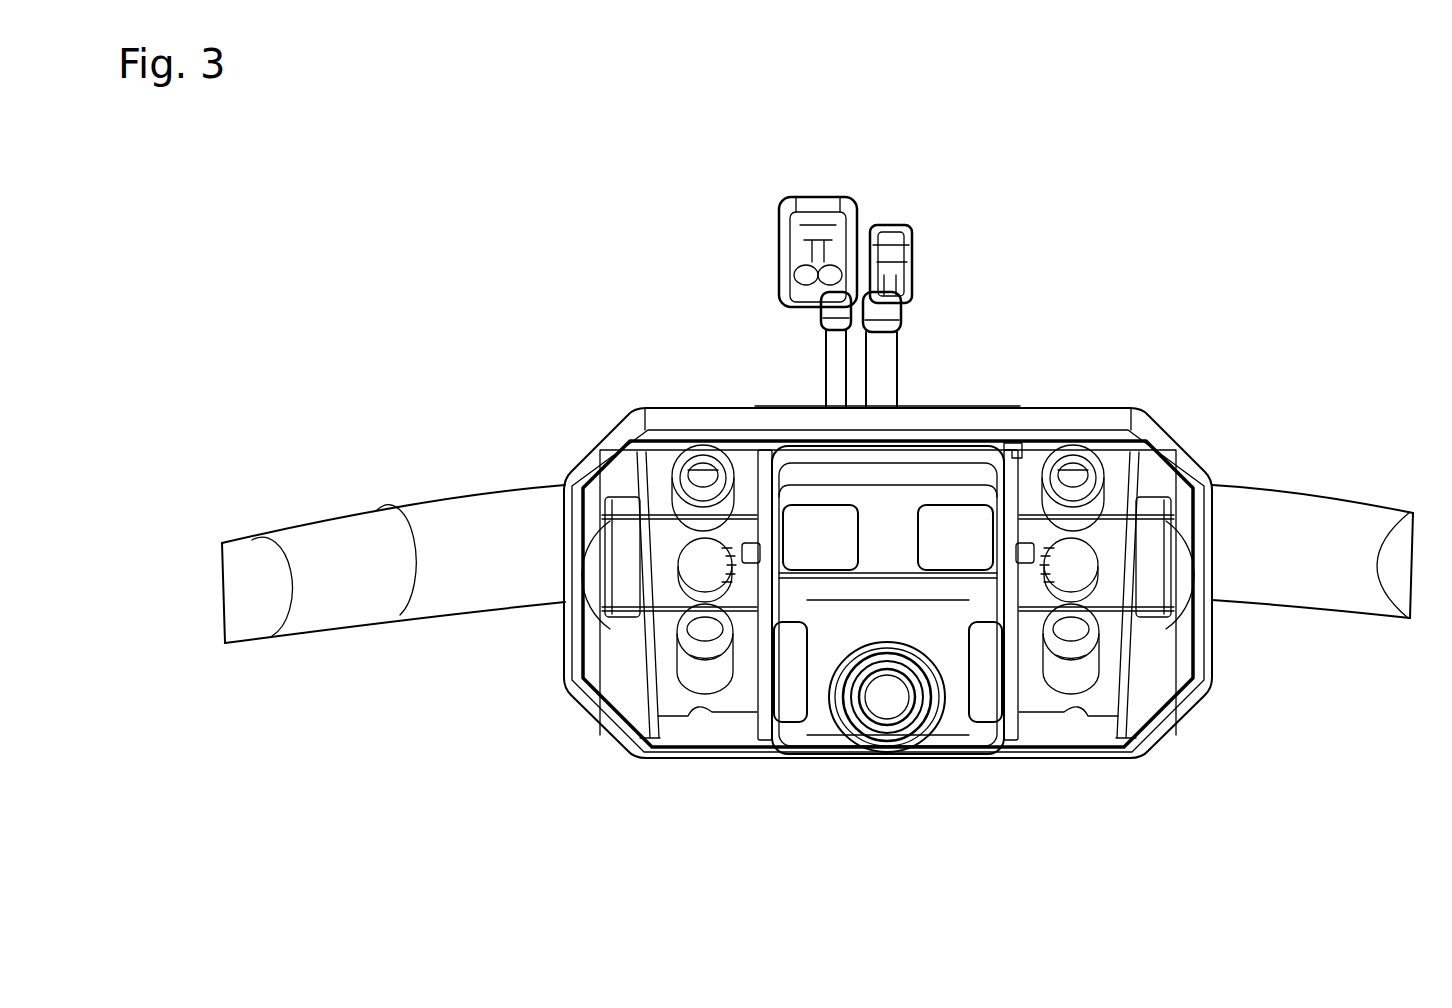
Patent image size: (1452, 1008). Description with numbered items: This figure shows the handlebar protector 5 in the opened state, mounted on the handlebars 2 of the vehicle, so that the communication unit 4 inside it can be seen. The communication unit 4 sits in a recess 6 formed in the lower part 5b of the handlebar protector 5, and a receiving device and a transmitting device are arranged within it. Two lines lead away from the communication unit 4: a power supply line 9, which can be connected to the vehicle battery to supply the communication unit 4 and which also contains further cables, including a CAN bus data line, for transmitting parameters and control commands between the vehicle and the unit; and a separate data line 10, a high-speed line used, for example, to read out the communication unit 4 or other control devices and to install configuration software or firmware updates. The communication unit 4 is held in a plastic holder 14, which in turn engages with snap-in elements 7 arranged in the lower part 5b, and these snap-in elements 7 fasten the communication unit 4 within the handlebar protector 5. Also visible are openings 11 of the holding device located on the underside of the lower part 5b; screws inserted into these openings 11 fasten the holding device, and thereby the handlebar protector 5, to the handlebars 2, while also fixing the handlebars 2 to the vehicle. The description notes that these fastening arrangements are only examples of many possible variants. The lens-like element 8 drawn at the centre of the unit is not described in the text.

The handlebars 2 is at (327, 592).
The communication unit 4 is at (847, 552).
The handlebar protector 5 is at (1170, 440).
The lower part 5b is at (767, 775).
The recess 6 is at (1017, 442).
The snap-in elements 7 is at (758, 575).
The lens 8 is at (888, 703).
The power supply line 9 is at (895, 365).
The data line 10 is at (826, 364).
The openings 11 is at (707, 652).
The holder 14 is at (950, 675).